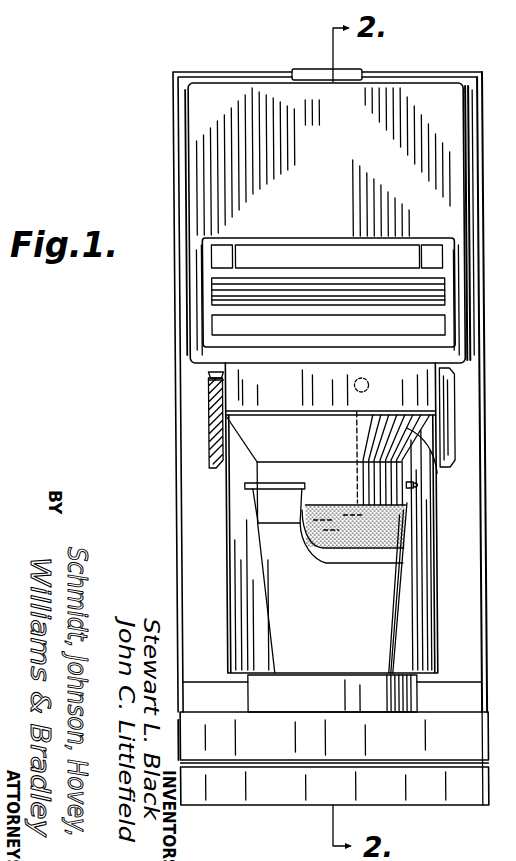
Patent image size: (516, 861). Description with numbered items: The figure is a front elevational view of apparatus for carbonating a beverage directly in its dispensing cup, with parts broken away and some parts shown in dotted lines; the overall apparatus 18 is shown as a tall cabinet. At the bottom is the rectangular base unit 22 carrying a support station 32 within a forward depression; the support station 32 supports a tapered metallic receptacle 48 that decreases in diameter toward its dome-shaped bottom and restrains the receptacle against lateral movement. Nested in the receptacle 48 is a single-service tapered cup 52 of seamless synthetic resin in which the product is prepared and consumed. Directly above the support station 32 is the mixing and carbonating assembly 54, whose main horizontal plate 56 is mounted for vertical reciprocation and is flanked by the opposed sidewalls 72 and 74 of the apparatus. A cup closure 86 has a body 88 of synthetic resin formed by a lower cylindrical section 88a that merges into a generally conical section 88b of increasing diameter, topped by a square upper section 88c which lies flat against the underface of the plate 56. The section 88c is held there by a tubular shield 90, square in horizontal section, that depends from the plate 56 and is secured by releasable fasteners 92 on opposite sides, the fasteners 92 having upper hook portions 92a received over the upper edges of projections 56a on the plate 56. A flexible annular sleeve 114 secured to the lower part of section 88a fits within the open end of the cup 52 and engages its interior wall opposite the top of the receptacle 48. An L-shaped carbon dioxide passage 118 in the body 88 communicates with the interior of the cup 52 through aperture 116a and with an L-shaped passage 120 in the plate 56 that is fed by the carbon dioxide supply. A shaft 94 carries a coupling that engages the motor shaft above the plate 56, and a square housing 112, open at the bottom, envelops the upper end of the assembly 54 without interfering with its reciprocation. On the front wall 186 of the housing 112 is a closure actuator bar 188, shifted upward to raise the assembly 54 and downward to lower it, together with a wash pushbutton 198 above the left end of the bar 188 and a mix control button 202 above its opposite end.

The cabinet 18 is at (344, 392).
The rectangular base unit 22 is at (286, 808).
The support station 32 is at (415, 693).
The metallic receptacle 48 is at (396, 637).
The single-service tapered cup 52 is at (246, 516).
The mixing and carbonating assembly 54 is at (361, 68).
The main horizontal plate 56 is at (304, 377).
The projections 56a is at (209, 388).
The sidewall 72 is at (478, 240).
The sidewall 74 is at (176, 215).
The cup closure 86 is at (240, 452).
The body 88 is at (296, 486).
The lower cylindrical section 88a is at (253, 472).
The conical section 88b is at (436, 472).
The square upper section 88c is at (250, 411).
The tubular shield 90 is at (223, 595).
The releasable fasteners 92 is at (202, 444).
The upper hook portions 92a is at (209, 375).
The shaft 94 is at (450, 440).
The square housing 112 is at (188, 127).
The flexible annular sleeve 114 is at (401, 524).
The aperture 116a is at (333, 533).
The carbon dioxide passage 118 is at (356, 474).
The L-shaped passage 120 is at (366, 400).
The front wall 186 is at (327, 246).
The closure actuator bar 188 is at (211, 285).
The pushbutton 198 is at (224, 247).
The mix control button 202 is at (433, 246).